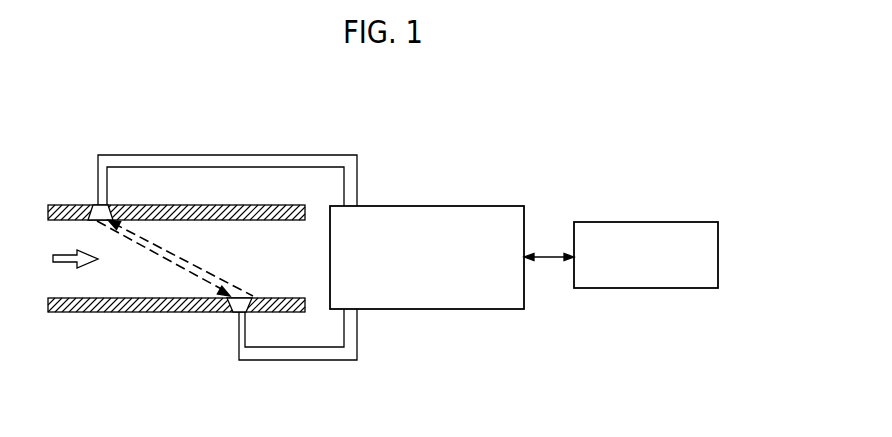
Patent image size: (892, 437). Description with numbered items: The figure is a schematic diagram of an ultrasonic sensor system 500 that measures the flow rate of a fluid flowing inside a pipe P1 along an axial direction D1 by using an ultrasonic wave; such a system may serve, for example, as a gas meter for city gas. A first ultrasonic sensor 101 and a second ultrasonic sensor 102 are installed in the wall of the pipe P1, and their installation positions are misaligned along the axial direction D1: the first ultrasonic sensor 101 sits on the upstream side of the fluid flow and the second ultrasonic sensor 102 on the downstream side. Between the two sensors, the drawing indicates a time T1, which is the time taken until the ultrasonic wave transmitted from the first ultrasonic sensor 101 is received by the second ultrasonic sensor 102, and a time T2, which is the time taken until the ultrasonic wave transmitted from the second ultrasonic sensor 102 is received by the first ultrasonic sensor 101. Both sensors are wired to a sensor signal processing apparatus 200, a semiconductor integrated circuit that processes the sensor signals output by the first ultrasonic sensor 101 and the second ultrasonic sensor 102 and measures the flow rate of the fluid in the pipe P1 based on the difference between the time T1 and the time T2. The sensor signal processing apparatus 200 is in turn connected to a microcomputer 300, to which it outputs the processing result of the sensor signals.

The ultrasonic sensor system 500 is at (620, 88).
The pipe P1 is at (290, 205).
The first ultrasonic sensor 101 is at (95, 206).
The second ultrasonic sensor 102 is at (237, 313).
The axial direction D1 is at (74, 250).
The time T1 is at (163, 258).
The time T2 is at (180, 258).
The sensor signal processing apparatus 200 is at (517, 206).
The microcomputer 300 is at (697, 222).